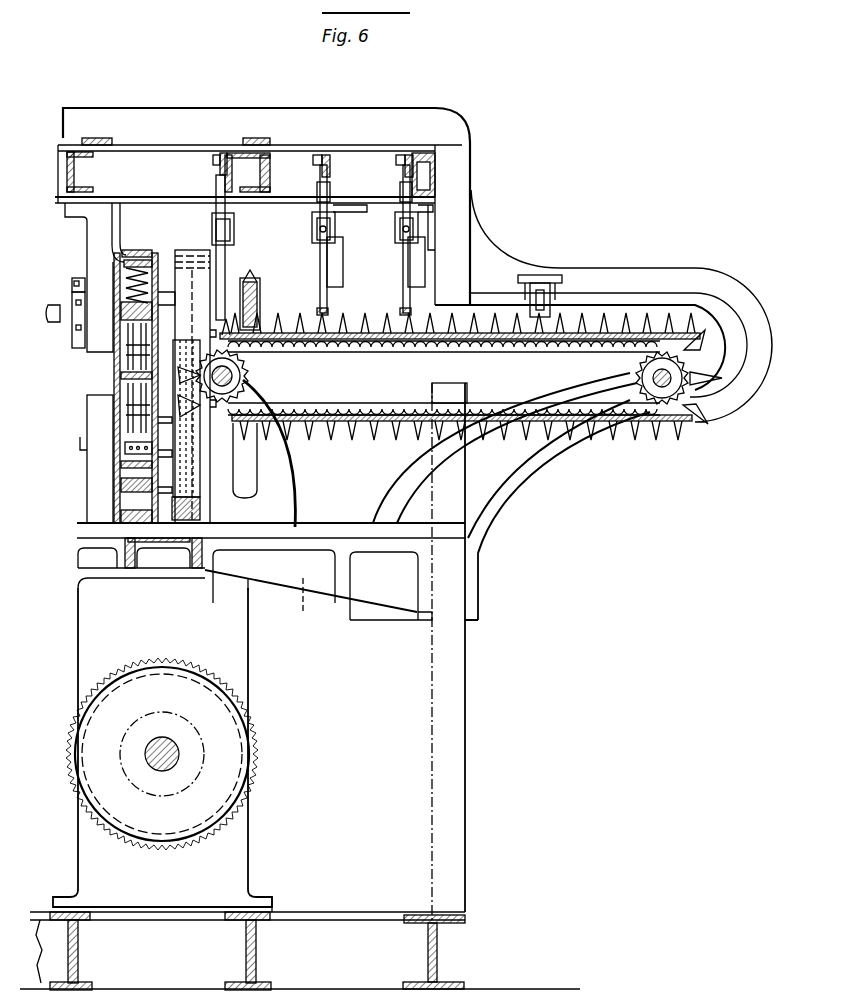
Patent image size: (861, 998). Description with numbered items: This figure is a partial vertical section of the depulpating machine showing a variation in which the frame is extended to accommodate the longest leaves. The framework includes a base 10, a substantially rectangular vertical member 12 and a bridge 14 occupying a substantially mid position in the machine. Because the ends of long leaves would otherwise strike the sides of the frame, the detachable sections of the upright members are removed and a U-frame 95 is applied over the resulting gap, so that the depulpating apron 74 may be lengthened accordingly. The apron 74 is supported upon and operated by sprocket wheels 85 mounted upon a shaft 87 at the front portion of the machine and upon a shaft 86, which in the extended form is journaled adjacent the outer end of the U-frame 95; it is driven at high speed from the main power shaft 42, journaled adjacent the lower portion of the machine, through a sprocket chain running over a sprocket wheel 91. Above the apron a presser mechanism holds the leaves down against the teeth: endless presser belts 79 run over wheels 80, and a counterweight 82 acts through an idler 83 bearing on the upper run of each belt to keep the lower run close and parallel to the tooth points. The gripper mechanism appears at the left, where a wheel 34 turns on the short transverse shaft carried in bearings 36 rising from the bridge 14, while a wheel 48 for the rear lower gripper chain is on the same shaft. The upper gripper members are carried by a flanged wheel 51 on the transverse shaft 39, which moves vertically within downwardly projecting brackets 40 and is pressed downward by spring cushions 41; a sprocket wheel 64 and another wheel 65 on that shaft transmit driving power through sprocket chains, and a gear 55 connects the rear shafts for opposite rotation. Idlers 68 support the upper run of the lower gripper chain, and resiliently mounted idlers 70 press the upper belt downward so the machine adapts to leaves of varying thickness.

The base 10 is at (308, 930).
The vertical member 12 is at (432, 128).
The bridge 14 is at (311, 601).
The wheel 34 is at (128, 465).
The bearings 36 is at (95, 512).
The transverse shaft 39 is at (72, 296).
The downwardly projecting brackets 40 is at (100, 260).
The spring cushions 41 is at (135, 262).
The main power shaft 42 is at (178, 740).
The wheel 48 is at (182, 440).
The flanged wheel 51 is at (190, 255).
The gear 55 is at (82, 446).
The sprocket wheel 64 is at (258, 292).
The wheel 65 is at (75, 330).
The idlers 68 is at (120, 410).
The idlers 70 is at (120, 370).
The apron 74 is at (460, 385).
The presser belts 79 is at (400, 312).
The wheels 80 is at (408, 274).
The counterweight 82 is at (400, 190).
The idler 83 is at (396, 236).
The sprocket wheels 85 is at (265, 392).
The shaft 86 is at (675, 402).
The shaft 87 is at (242, 376).
The sprocket wheel 91 is at (235, 722).
The U-frames 95 is at (652, 292).